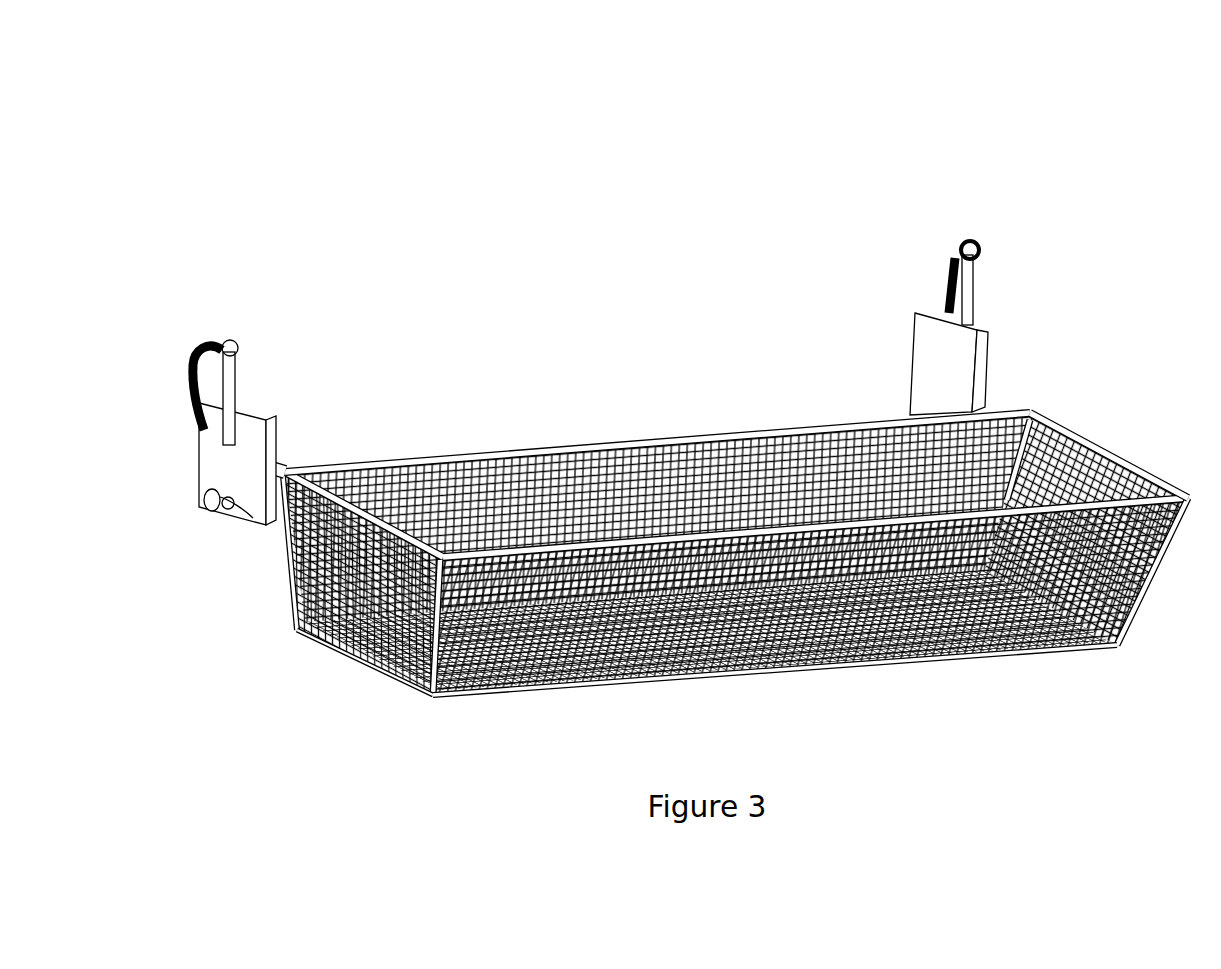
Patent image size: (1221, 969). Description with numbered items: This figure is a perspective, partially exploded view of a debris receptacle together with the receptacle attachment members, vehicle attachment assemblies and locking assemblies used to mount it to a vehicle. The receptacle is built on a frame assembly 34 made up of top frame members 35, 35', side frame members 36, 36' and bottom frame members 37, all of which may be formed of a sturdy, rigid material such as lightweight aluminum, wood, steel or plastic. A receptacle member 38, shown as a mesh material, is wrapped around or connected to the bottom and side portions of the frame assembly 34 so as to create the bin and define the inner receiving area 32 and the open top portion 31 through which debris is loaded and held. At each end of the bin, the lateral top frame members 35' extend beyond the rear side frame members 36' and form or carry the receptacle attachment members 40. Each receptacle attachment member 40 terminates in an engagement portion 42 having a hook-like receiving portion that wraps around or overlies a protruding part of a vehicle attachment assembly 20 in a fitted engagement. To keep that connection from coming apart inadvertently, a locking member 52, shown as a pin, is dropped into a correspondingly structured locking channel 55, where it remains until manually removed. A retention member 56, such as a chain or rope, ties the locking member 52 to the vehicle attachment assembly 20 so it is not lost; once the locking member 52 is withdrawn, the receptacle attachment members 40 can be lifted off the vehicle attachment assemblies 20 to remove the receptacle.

The vehicle attachment assembly 20 is at (927, 342).
The open top portion 31 is at (539, 447).
The inner receiving area 32 is at (574, 497).
The frame assembly 34 is at (1075, 350).
The top frame member 35 is at (657, 467).
The lateral top frame member 35' is at (736, 541).
The side frame member 36 is at (703, 648).
The rear side frame member 36' is at (1030, 403).
The bottom frame member 37 is at (371, 663).
The receptacle member 38 is at (850, 428).
The receptacle attachment member 40 is at (281, 444).
The engagement portion 42 is at (253, 515).
The locking member 52 is at (253, 353).
The locking channel 55 is at (248, 420).
The retention member 56 is at (200, 351).